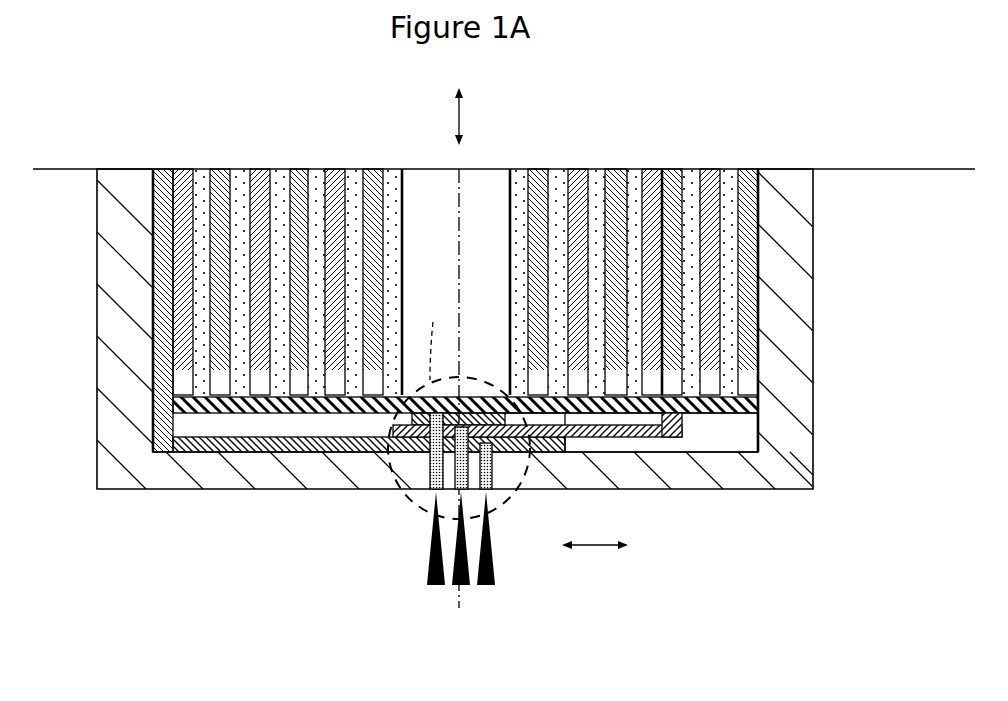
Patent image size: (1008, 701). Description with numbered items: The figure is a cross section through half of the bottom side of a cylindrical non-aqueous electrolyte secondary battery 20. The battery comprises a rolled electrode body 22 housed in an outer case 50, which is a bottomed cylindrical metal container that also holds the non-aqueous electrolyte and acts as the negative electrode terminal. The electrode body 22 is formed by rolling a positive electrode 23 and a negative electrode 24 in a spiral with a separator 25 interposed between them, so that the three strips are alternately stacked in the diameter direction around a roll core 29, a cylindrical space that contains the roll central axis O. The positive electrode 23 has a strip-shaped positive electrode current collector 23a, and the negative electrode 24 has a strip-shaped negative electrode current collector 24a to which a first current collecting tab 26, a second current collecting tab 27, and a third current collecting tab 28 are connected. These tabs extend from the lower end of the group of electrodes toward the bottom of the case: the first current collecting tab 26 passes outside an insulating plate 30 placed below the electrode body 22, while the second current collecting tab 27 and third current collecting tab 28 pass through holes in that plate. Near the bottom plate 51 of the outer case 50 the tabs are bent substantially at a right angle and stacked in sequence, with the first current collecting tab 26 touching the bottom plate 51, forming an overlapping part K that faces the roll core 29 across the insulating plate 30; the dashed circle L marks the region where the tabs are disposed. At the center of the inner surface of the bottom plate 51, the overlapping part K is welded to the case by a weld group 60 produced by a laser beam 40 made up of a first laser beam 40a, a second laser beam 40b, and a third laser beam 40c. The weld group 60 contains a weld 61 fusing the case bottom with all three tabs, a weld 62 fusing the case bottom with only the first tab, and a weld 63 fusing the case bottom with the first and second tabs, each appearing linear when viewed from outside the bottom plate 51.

The non-aqueous electrolyte secondary battery 20 is at (778, 120).
The rolled electrode body 22 is at (613, 167).
The positive electrode 23 is at (712, 168).
The positive electrode current collector 23a is at (717, 227).
The negative electrode 24 is at (650, 168).
The negative electrode current collector 24a is at (664, 440).
The separator 25 is at (686, 168).
The first current collecting tab 26 is at (190, 451).
The second current collecting tab 27 is at (727, 425).
The third current collecting tab 28 is at (515, 396).
The roll core 29 is at (432, 190).
The insulating plate 30 is at (232, 413).
The laser beam 40 is at (472, 579).
The first laser beam 40a is at (433, 588).
The second laser beam 40b is at (458, 608).
The third laser beam 40c is at (487, 588).
The outer case 50 is at (818, 285).
The bottom plate 51 is at (290, 480).
The weld group 60 is at (570, 445).
The weld 61 is at (410, 490).
The weld 62 is at (497, 465).
The weld 63 is at (425, 462).
The overlapping part K is at (612, 440).
The dashed circle L is at (432, 339).
The roll central axis O is at (460, 208).